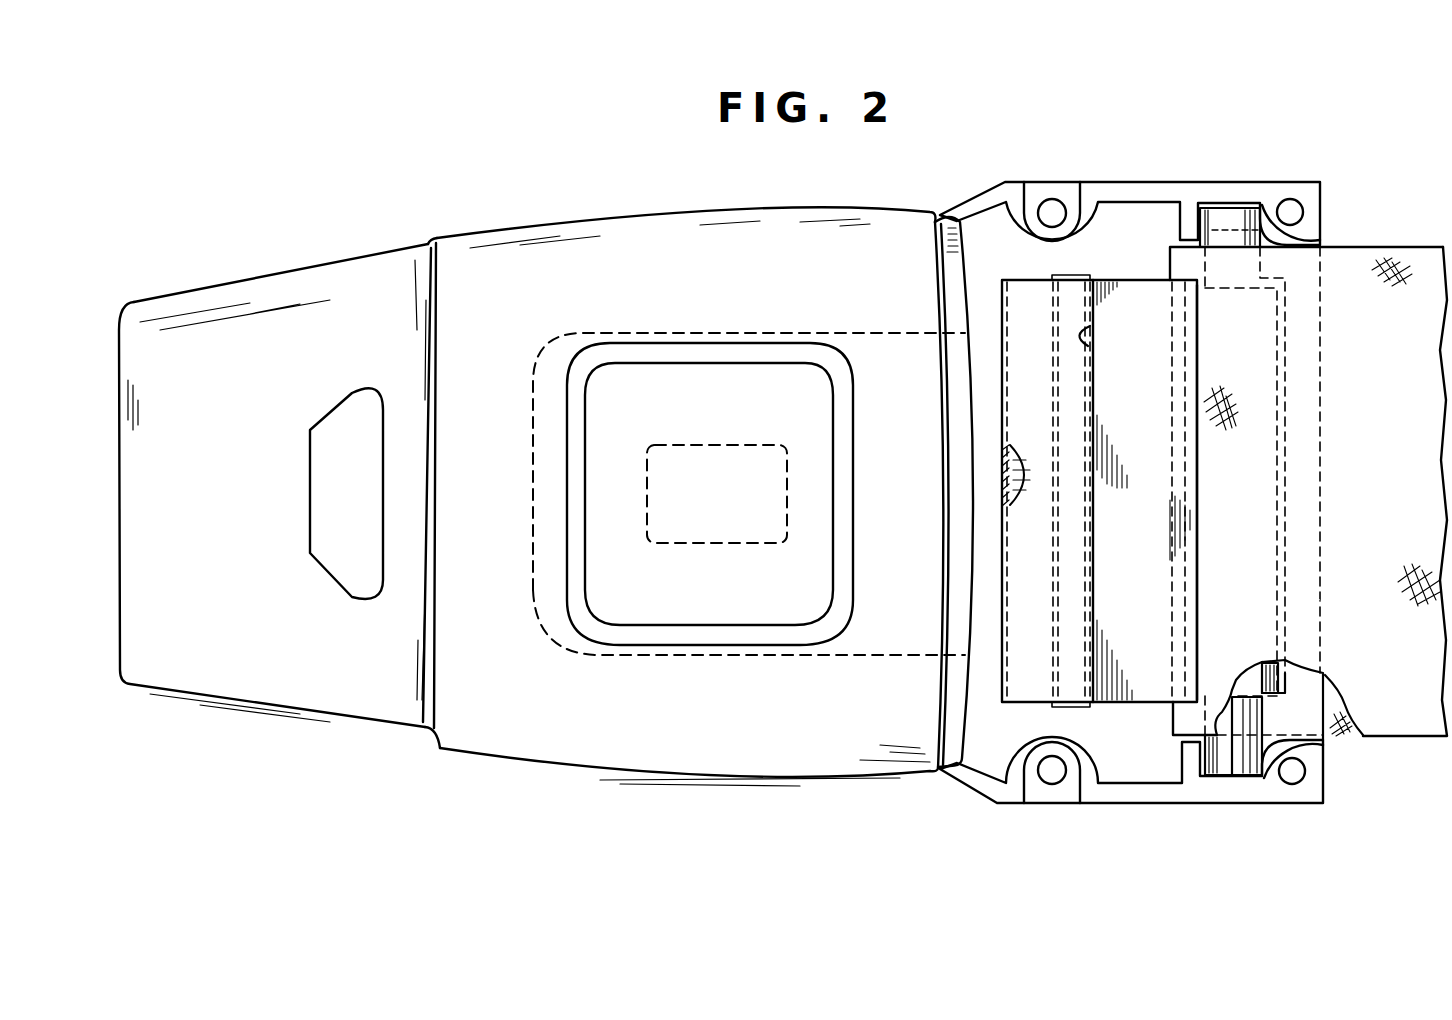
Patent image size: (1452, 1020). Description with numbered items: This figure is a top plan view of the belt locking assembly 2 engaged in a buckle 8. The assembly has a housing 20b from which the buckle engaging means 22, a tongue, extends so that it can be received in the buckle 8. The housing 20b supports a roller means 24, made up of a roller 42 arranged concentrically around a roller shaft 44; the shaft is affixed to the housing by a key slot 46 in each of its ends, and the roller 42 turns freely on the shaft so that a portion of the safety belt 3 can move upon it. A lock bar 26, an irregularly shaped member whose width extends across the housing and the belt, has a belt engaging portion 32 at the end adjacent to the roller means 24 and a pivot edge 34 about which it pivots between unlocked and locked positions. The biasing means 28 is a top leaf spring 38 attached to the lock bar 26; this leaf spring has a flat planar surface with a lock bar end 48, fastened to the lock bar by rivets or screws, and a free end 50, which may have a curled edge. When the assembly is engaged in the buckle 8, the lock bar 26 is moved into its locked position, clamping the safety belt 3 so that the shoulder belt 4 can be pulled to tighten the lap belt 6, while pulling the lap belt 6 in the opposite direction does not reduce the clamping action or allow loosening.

The belt locking assembly 2 is at (992, 808).
The safety belt 3 is at (1360, 262).
The shoulder belt 4 is at (1356, 627).
The lap belt 6 is at (1340, 712).
The buckle 8 is at (640, 742).
The housing 20b is at (1002, 184).
The buckle engaging means 22 is at (533, 596).
The roller means 24 is at (1228, 208).
The lock bar 26 is at (1115, 597).
The biasing means 28 is at (992, 406).
The belt engaging portion 32 is at (1195, 573).
The pivot edge 34 is at (1092, 332).
The top leaf spring 38 is at (1042, 562).
The roller 42 is at (1278, 352).
The roller shaft 44 is at (1232, 238).
The key slot 46 is at (1215, 222).
The lock bar end 48 is at (1097, 522).
The free end 50 is at (1002, 468).